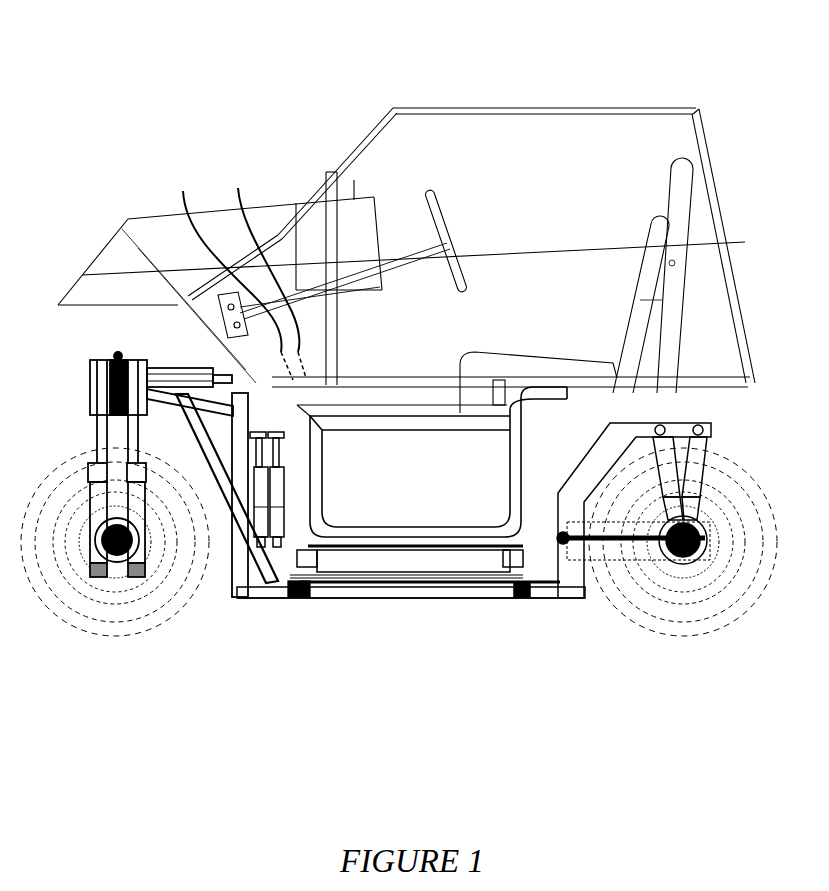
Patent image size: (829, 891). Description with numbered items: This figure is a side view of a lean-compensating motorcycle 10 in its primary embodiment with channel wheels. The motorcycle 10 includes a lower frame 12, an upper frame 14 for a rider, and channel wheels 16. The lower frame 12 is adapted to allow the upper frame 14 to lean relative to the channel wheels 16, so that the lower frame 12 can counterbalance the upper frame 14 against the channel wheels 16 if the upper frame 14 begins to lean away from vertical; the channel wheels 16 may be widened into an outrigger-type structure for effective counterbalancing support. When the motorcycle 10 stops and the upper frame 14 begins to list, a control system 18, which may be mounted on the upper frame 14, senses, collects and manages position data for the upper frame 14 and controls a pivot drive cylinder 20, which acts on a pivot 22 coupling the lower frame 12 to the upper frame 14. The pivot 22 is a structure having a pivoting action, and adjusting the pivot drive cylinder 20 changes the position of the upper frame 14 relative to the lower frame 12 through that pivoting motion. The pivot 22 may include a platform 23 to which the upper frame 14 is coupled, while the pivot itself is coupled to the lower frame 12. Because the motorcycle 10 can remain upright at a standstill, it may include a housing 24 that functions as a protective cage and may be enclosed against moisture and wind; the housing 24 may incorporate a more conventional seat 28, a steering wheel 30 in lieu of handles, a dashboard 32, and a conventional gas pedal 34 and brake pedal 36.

The lean-compensating motorcycle 10 is at (100, 82).
The lower frame 12 is at (236, 597).
The upper frame 14 is at (532, 458).
The channel wheels 16 is at (75, 623).
The control system 18 is at (323, 598).
The pivot drive cylinder 20 is at (272, 418).
The pivot 22 is at (297, 603).
The platform 23 is at (257, 553).
The housing 24 is at (569, 103).
The seat 28 is at (655, 263).
The steering wheel 30 is at (438, 203).
The dashboard 32 is at (354, 180).
The gas pedal 34 is at (269, 272).
The brake pedal 36 is at (234, 274).